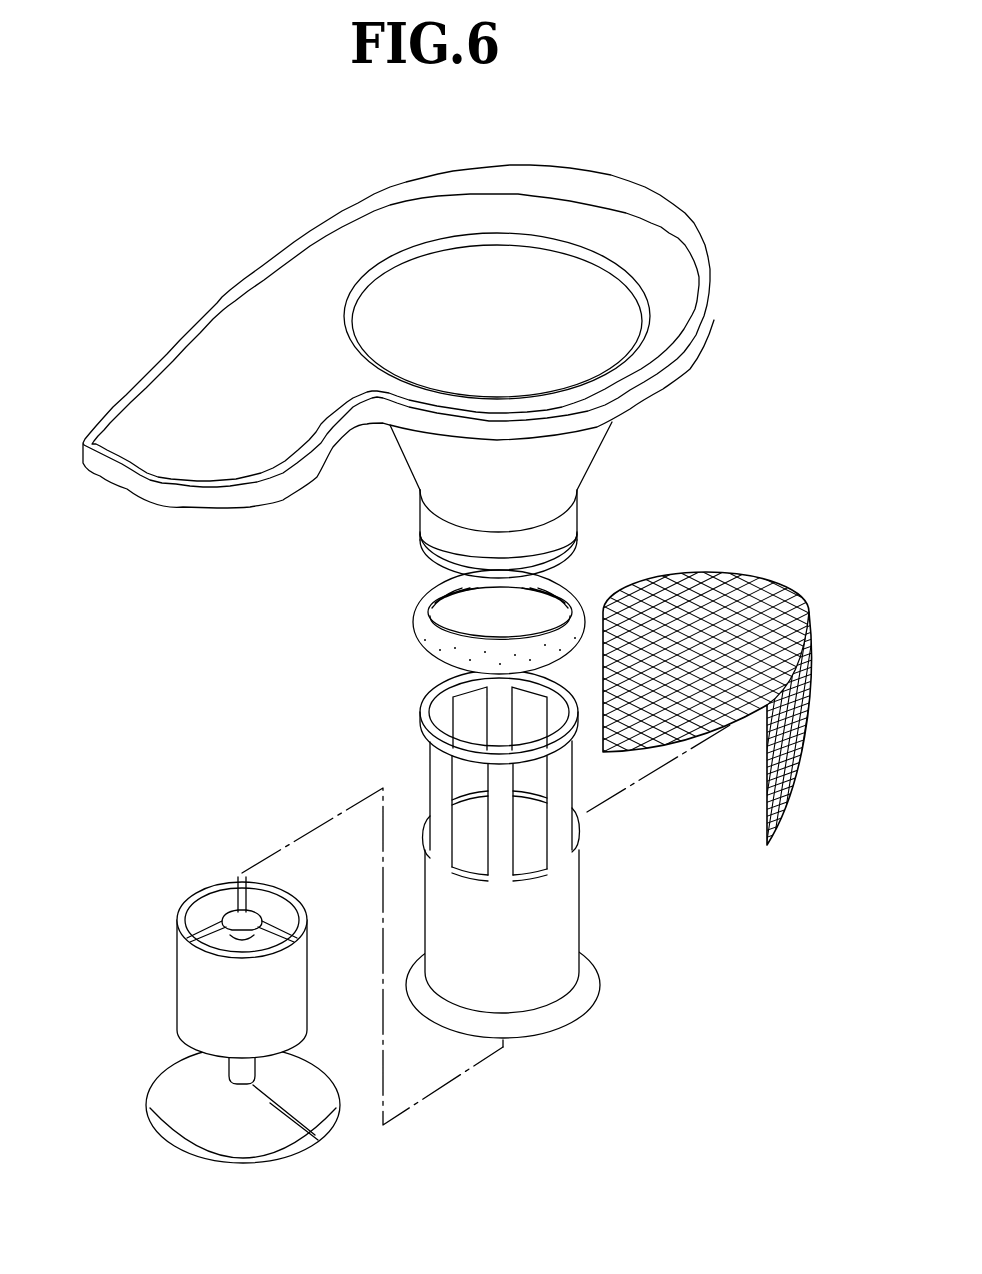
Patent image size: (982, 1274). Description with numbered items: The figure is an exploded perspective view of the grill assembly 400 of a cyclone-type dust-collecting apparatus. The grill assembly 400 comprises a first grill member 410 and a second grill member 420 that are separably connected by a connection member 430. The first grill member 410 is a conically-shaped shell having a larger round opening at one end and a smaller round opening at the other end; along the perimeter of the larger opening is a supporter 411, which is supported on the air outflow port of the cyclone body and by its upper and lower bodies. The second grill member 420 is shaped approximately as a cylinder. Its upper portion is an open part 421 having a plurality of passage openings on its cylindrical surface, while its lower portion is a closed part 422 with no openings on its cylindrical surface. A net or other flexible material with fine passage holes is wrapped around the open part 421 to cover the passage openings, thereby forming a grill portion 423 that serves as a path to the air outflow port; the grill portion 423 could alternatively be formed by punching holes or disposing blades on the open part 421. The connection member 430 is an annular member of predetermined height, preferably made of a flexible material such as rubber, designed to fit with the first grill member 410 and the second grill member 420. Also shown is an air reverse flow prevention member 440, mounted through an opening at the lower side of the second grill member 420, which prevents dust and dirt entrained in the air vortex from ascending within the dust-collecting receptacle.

The grill assembly 400 is at (100, 214).
The first grill member 410 is at (442, 350).
The supporter 411 is at (307, 236).
The second grill member 420 is at (625, 854).
The open part 421 is at (553, 822).
The closed part 422 is at (563, 947).
The grill portion 423 is at (767, 608).
The connection member 430 is at (415, 620).
The air reverse flow prevention member 440 is at (209, 858).